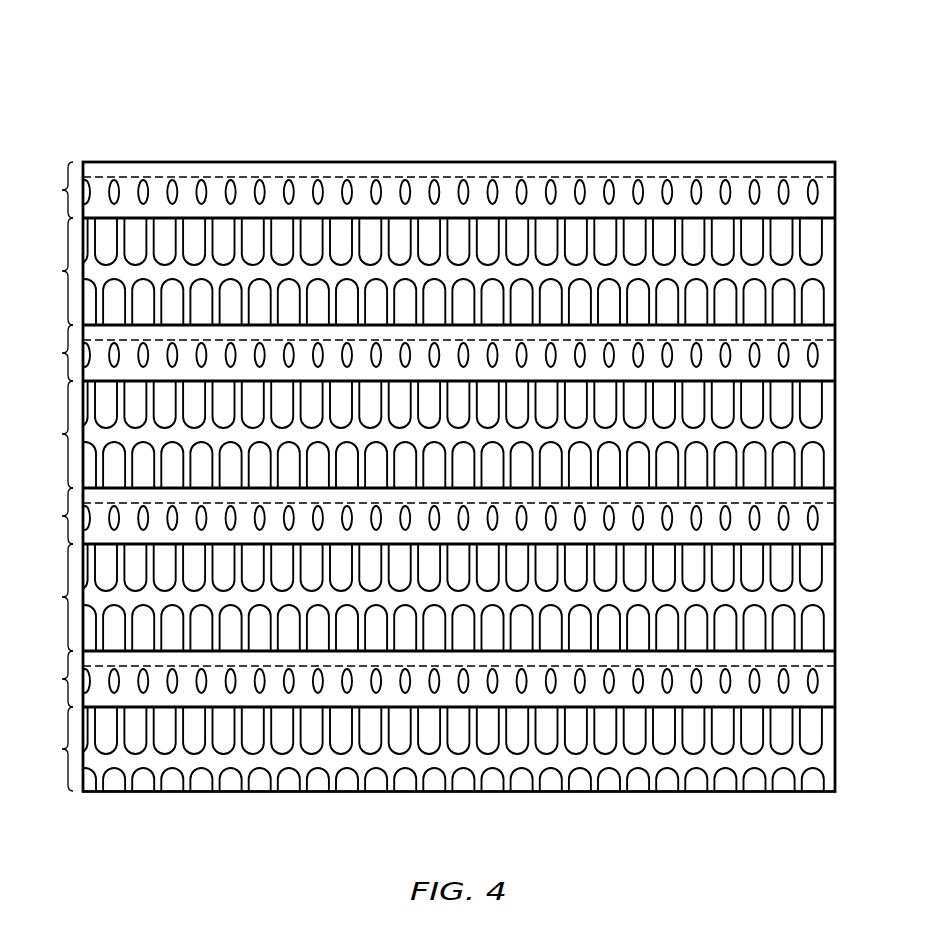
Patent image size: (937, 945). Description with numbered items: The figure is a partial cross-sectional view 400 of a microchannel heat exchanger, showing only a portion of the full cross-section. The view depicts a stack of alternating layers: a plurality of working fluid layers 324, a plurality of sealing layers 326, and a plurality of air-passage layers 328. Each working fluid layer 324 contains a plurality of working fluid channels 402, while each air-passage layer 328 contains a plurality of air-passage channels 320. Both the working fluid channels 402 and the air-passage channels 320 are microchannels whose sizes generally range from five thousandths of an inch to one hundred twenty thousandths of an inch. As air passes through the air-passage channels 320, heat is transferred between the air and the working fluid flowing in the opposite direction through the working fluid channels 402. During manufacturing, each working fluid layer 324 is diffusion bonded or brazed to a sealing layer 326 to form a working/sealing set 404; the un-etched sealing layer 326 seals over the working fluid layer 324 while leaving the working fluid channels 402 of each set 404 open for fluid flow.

The partial cross-sectional view 400 is at (195, 82).
The working fluid channels 402 is at (376, 343).
The working/sealing sets 404 is at (466, 476).
The air-passage channels 320 is at (620, 282).
The working fluid layers 324 is at (837, 197).
The sealing layers 326 is at (823, 162).
The air-passage layers 328 is at (465, 486).